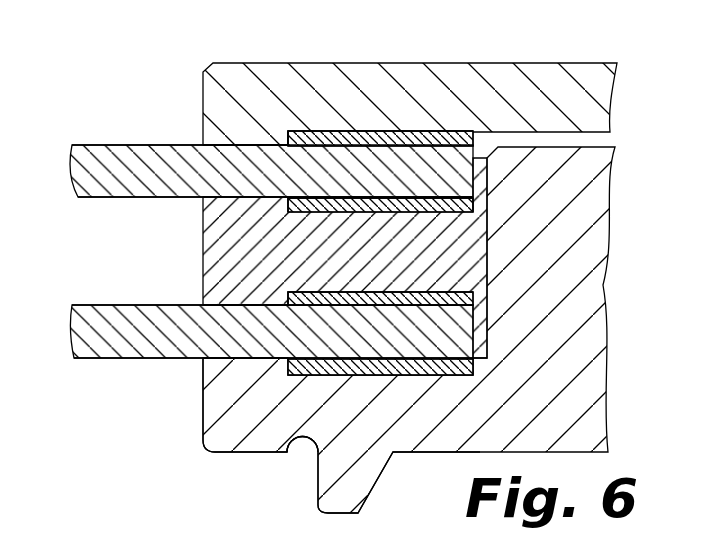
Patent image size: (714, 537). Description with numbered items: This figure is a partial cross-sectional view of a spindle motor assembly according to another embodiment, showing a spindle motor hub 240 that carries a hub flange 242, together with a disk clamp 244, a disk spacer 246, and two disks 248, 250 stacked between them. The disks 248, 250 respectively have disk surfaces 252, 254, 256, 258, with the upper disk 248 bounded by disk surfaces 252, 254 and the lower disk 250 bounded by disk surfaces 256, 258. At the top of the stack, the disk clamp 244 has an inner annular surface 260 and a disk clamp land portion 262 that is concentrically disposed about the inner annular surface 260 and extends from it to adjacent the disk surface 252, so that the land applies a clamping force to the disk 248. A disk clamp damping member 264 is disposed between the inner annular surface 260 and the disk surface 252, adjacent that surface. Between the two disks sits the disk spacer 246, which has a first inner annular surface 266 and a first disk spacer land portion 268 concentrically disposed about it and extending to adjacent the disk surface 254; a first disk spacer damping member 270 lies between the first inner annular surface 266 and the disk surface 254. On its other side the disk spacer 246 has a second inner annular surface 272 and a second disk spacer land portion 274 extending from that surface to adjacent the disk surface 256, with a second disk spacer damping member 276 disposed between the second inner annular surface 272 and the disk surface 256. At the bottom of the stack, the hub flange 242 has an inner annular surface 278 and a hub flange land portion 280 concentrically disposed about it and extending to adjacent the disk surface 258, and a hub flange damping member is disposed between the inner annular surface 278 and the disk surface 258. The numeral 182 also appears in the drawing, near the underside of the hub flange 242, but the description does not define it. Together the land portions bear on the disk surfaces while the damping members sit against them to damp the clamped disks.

The notch 182 is at (292, 400).
The spindle motor hub 240 is at (600, 173).
The hub flange 242 is at (208, 407).
The disk clamp 244 is at (607, 88).
The disk spacer 246 is at (467, 250).
The disk 248 is at (72, 170).
The disk 250 is at (71, 336).
The disk surface 252 is at (92, 144).
The disk surface 254 is at (97, 198).
The disk surface 256 is at (92, 305).
The disk surface 258 is at (97, 358).
The inner annular surface 260 is at (419, 128).
The disk clamp land portion 262 is at (236, 131).
The disk clamp damping member 264 is at (322, 131).
The first inner annular surface 266 is at (292, 222).
The first disk spacer land portion 268 is at (247, 207).
The first disk spacer damping member 270 is at (473, 208).
The second inner annular surface 272 is at (332, 288).
The second disk spacer land portion 274 is at (230, 296).
The second disk spacer damping member 276 is at (474, 300).
The inner annular surface 278 is at (417, 384).
The hub flange land portion 280 is at (242, 367).